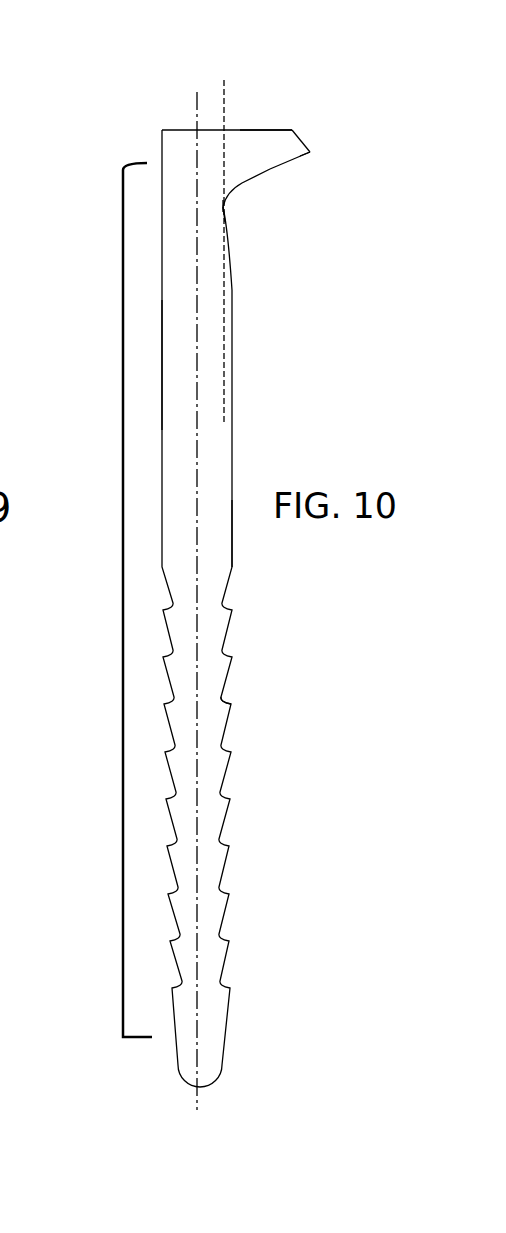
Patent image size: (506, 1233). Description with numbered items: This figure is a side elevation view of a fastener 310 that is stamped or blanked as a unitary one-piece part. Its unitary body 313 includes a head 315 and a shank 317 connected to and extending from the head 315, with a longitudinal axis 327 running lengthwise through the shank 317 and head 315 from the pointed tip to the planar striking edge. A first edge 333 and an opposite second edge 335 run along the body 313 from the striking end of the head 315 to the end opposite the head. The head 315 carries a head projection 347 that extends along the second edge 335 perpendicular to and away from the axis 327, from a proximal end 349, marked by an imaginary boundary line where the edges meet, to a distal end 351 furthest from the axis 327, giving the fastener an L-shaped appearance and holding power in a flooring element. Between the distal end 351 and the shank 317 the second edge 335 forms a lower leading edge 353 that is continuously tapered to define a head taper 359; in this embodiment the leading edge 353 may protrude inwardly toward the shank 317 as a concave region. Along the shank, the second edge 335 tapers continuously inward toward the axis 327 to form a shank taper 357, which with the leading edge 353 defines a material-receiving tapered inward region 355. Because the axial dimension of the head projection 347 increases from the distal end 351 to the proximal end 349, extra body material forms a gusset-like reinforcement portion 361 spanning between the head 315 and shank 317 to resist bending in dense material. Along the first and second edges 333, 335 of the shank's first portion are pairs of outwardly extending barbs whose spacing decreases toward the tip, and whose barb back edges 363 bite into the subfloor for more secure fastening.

The fastener 310 is at (69, 117).
The unitary body 313 is at (121, 603).
The head 315 is at (175, 145).
The shank 317 is at (210, 562).
The longitudinal axis 327 is at (197, 447).
The first edge 333 is at (162, 365).
The second edge 335 is at (235, 397).
The head projection 347 is at (252, 137).
The proximal end 349 is at (220, 180).
The distal end 351 is at (312, 152).
The lower leading edge 353 is at (260, 173).
The tapered inward region 355 is at (248, 218).
The shank taper 357 is at (222, 207).
The head taper 359 is at (291, 159).
The gusset-like reinforcement portion 361 is at (247, 155).
The barb back edges 363 is at (230, 700).